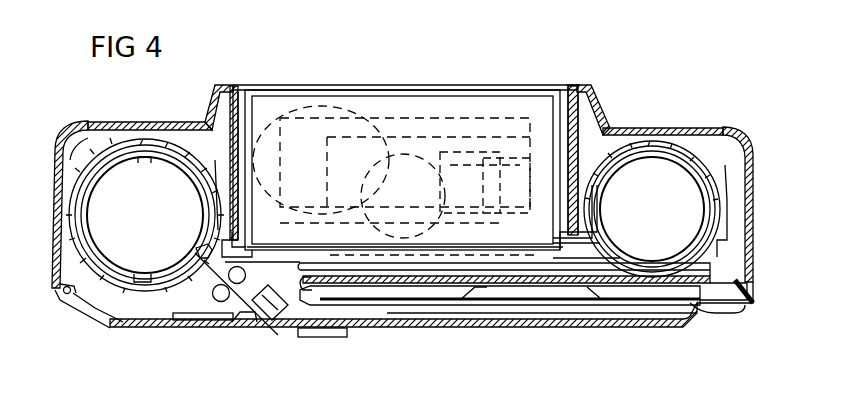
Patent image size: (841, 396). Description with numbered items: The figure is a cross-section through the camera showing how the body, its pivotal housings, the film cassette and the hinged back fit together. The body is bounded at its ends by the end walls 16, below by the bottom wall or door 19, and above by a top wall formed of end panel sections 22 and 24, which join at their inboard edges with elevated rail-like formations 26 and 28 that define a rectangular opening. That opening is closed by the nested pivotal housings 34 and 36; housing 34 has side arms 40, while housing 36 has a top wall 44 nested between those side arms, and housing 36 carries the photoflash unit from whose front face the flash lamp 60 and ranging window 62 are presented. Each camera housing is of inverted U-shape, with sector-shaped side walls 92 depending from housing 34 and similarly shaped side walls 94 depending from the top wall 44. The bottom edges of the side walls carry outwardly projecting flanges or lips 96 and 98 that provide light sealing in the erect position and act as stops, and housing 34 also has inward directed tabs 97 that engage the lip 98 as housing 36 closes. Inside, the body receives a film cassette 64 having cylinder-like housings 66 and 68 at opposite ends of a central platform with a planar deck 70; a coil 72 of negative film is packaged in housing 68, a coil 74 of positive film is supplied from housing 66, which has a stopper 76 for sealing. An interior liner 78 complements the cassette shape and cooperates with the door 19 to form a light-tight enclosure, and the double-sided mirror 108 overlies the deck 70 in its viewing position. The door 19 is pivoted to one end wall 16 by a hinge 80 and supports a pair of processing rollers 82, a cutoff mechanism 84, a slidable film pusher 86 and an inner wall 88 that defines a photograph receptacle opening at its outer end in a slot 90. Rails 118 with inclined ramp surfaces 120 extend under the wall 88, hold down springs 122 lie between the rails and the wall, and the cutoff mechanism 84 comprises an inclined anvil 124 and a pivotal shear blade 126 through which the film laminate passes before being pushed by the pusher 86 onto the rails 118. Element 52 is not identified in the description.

The end wall 16 is at (58, 141).
The bottom wall or door 19 is at (146, 338).
The end panel section 22 is at (156, 122).
The end panel section 24 is at (656, 128).
The rail-like formation 26 is at (214, 90).
The rail-like formation 28 is at (596, 100).
The pivotal housing 34 is at (579, 80).
The pivotal housing 36 is at (465, 82).
The side arm 40 is at (240, 85).
The top wall 44 is at (400, 85).
The pinch roller 52 is at (426, 162).
The flash lamp 60 is at (514, 160).
The ranging window 62 is at (352, 108).
The film cassette 64 is at (690, 159).
The cassette housing 66 is at (97, 172).
The cassette housing 68 is at (681, 173).
The planar deck 70 is at (298, 265).
The coil 72 is at (652, 209).
The coil 74 is at (145, 216).
The stopper 76 is at (196, 251).
The interior liner 78 is at (103, 147).
The hinge 80 is at (62, 294).
The processing rollers 82 is at (206, 295).
The cutoff mechanism 84 is at (285, 348).
The film pusher 86 is at (250, 327).
The inner wall 88 is at (605, 280).
The slot 90 is at (758, 316).
The side wall 92 is at (233, 110).
The side wall 94 is at (253, 116).
The flange or lip 96 is at (236, 224).
The lip or tab 97 is at (268, 246).
The flange or lip 98 is at (242, 233).
The double-sided mirror 108 is at (524, 248).
The rail 118 is at (450, 315).
The ramp surface 120 is at (345, 315).
The photograph hold down spring 122 is at (585, 300).
The inclined anvil 124 is at (226, 322).
The pivotal shear blade 126 is at (288, 338).